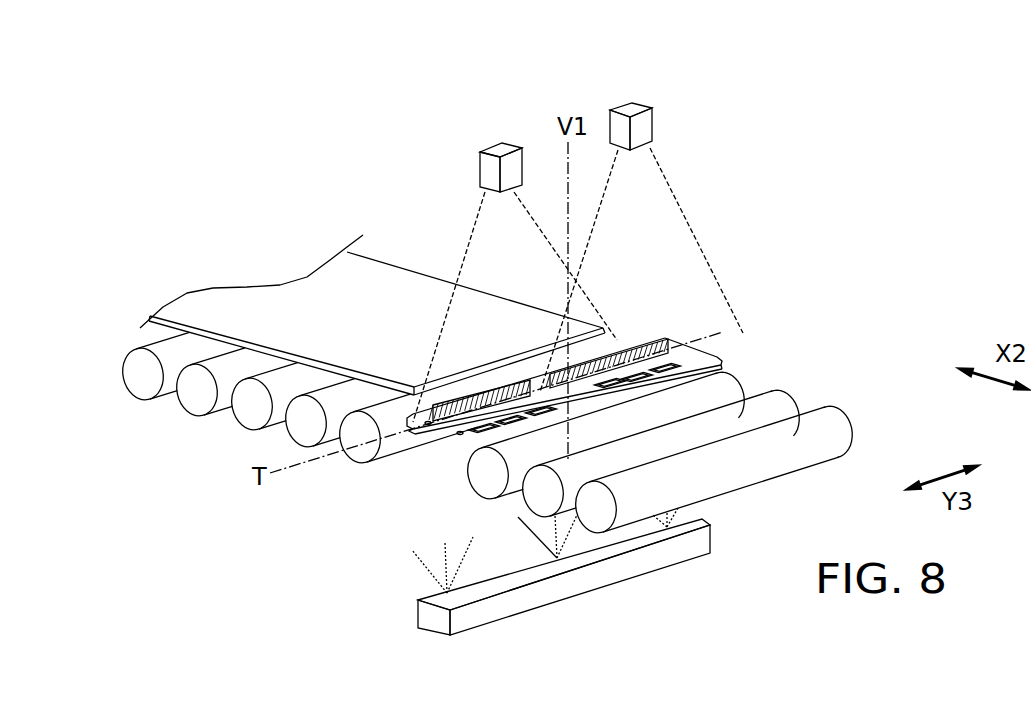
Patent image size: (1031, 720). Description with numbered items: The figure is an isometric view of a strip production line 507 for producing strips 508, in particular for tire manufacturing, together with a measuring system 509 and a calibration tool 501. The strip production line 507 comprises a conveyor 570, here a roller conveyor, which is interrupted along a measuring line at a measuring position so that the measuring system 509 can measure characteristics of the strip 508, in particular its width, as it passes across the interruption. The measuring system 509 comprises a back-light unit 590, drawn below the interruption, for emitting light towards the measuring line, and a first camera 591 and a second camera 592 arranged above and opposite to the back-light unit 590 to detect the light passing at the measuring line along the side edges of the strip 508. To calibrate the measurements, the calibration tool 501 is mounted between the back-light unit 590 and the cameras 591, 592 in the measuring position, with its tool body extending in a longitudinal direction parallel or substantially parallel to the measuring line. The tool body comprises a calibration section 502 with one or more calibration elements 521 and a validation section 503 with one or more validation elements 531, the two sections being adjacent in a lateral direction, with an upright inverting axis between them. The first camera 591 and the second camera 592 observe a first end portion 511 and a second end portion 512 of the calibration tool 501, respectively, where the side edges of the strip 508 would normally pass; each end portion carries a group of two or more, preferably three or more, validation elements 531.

The strip production line 507 is at (312, 148).
The measuring system 509 is at (703, 100).
The strip 508 is at (392, 283).
The conveyor 570 is at (290, 437).
The validation section 503 is at (720, 357).
The calibration tool 501 is at (730, 292).
The first end portion 511 is at (482, 393).
The second end portion 512 is at (614, 346).
The calibration section 502 is at (647, 343).
The calibration element 521 is at (458, 436).
The validation element 531 is at (465, 437).
The first camera 591 is at (495, 145).
The second camera 592 is at (632, 105).
The back-light unit 590 is at (533, 593).